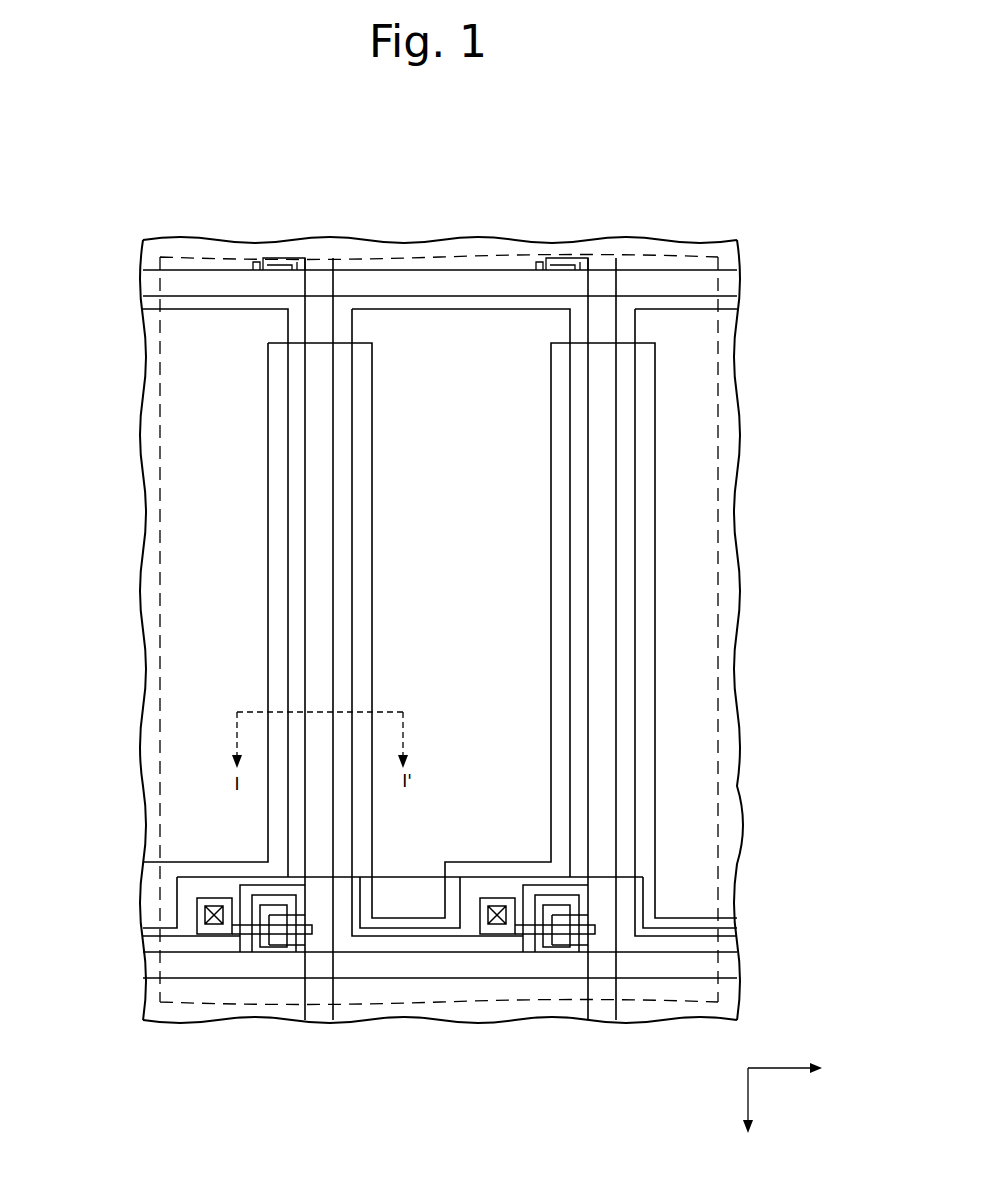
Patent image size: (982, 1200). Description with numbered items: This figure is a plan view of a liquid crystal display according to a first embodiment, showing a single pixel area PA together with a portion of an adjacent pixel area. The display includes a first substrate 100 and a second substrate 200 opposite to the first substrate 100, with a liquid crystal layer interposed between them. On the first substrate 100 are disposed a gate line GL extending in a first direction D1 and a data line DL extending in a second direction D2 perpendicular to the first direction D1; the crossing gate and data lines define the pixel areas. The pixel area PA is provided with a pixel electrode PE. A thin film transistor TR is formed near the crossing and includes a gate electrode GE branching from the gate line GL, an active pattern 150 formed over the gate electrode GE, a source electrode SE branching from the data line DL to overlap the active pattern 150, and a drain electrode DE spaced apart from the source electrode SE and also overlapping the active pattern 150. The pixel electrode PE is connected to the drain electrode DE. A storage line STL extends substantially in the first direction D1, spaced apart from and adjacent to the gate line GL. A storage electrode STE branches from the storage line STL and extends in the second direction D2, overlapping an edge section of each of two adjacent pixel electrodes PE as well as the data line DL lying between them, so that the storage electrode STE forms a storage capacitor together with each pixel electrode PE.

The first substrate 100 is at (140, 653).
The second substrate 200 is at (163, 595).
The active pattern 150 is at (548, 940).
The pixel area PA is at (420, 332).
The pixel electrode PE is at (497, 308).
The gate line GL is at (737, 280).
The data line DL is at (318, 1012).
The storage electrode STE is at (655, 540).
The storage line STL is at (408, 932).
The thin film transistor TR is at (578, 1090).
The gate electrode GE is at (533, 938).
The drain electrode DE is at (492, 930).
The source electrode SE is at (563, 945).
The first direction D1 is at (800, 1069).
The second direction D2 is at (750, 1114).